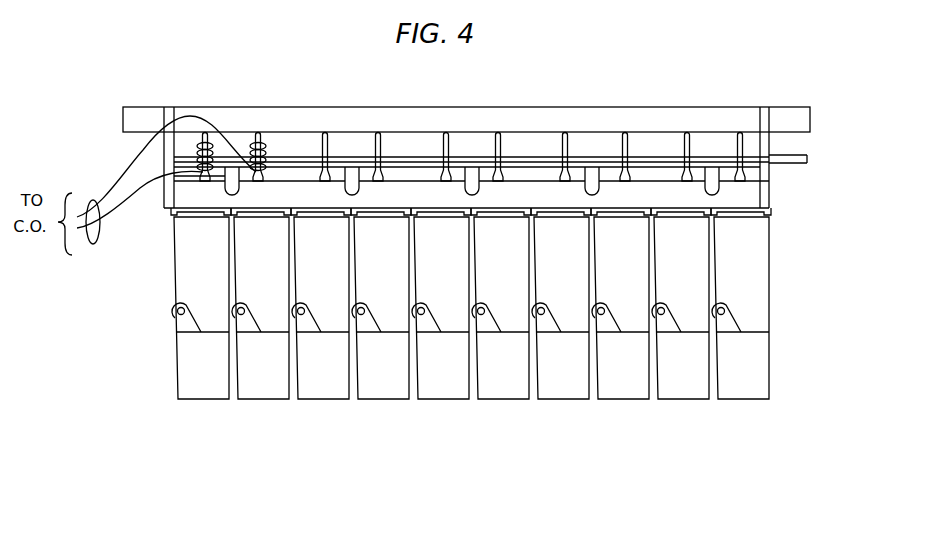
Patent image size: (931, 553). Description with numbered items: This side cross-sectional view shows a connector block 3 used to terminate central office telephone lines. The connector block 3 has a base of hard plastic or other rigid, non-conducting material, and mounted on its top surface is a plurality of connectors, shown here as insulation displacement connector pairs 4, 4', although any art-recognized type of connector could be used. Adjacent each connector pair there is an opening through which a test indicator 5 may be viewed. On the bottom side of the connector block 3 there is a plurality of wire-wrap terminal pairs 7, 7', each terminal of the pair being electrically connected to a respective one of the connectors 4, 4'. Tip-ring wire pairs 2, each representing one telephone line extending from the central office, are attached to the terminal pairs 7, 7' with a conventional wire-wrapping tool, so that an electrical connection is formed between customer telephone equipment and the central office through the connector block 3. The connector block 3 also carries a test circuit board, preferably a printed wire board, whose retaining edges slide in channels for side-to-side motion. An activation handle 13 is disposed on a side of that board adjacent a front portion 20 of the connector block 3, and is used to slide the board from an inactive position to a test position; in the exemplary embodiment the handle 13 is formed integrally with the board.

The tip-ring wire pair 2 is at (97, 246).
The connector block 3 is at (800, 243).
The insulation displacement connector 4 is at (492, 334).
The insulation displacement connector 4' is at (261, 334).
The test indicator 5 is at (230, 188).
The wire-wrap terminal 7 is at (212, 125).
The wire-wrap terminal 7' is at (265, 125).
The activation handle 13 is at (808, 160).
The front portion 20 is at (770, 196).